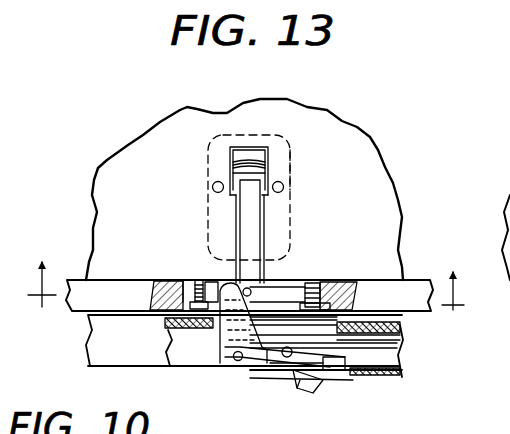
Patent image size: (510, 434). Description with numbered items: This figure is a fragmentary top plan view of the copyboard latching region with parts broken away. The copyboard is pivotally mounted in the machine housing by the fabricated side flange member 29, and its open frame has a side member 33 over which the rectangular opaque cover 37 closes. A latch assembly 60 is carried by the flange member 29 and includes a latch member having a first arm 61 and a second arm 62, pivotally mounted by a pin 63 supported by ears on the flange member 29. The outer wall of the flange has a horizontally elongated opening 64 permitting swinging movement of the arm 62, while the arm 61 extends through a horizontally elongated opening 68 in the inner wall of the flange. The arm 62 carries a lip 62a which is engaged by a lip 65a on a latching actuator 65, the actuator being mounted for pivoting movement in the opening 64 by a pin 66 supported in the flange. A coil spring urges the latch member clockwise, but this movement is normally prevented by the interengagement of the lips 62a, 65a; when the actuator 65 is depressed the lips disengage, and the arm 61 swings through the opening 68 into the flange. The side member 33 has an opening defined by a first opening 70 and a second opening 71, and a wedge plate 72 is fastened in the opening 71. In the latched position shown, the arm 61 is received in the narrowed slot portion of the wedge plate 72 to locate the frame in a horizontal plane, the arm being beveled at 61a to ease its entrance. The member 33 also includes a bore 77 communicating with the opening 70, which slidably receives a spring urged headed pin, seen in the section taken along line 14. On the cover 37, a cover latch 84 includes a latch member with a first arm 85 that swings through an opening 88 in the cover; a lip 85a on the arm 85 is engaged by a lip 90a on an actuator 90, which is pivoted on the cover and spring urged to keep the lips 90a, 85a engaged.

The section line 14- 14 is at (245, 286).
The side flange member 29 is at (98, 341).
The side member 33 is at (83, 292).
The opaque cover 37 is at (370, 167).
The latch assembly 60 is at (353, 380).
The first arm 61 is at (228, 338).
The bevel 61a is at (218, 282).
The second arm 62 is at (264, 352).
The lip 62a is at (283, 372).
The pin 63 is at (238, 361).
The horizontally elongated opening 64 is at (352, 374).
The latching actuator 65 is at (333, 388).
The lip 65a is at (310, 392).
The pin 66 is at (346, 358).
The horizontally elongated opening 68 is at (335, 337).
The first opening 70 is at (297, 282).
The second opening 71 is at (180, 278).
The wedge plate 72 is at (335, 285).
The bore 77 is at (275, 280).
The cover latch 84 is at (222, 210).
The first arm 85 is at (207, 220).
The lip 85a is at (287, 166).
The opening 88 is at (256, 222).
The actuator 90 is at (252, 175).
The lip 90a is at (255, 200).